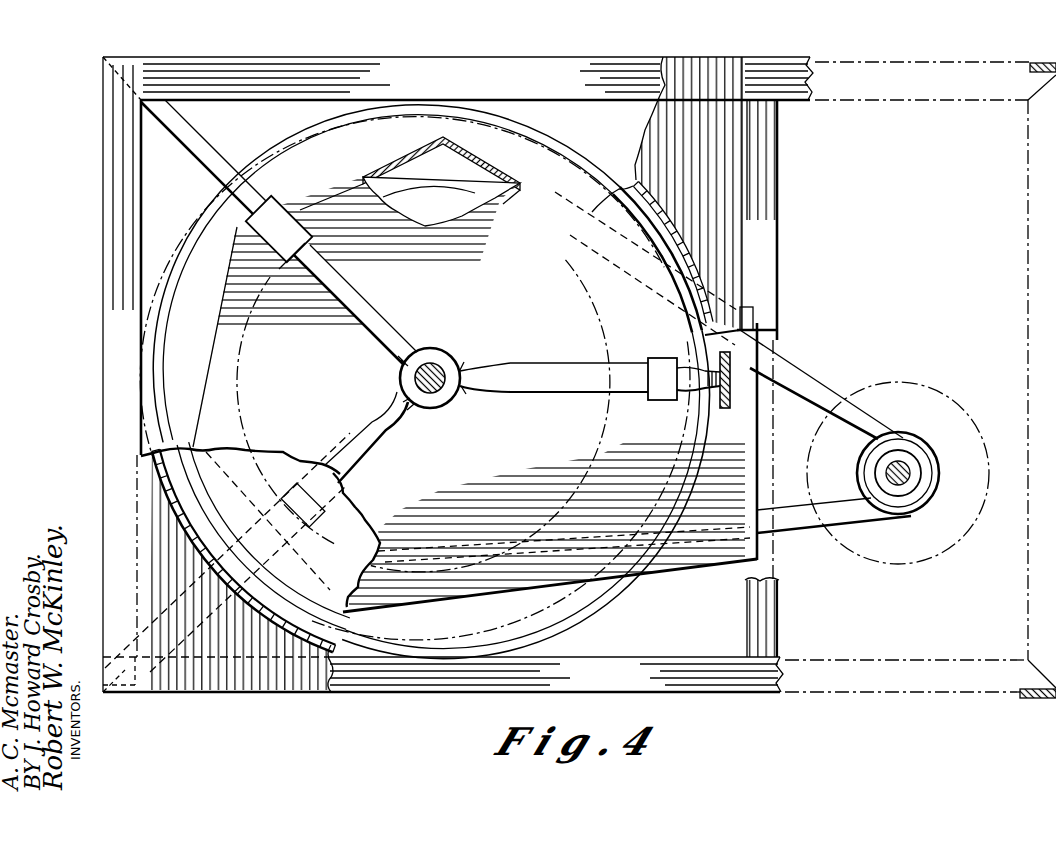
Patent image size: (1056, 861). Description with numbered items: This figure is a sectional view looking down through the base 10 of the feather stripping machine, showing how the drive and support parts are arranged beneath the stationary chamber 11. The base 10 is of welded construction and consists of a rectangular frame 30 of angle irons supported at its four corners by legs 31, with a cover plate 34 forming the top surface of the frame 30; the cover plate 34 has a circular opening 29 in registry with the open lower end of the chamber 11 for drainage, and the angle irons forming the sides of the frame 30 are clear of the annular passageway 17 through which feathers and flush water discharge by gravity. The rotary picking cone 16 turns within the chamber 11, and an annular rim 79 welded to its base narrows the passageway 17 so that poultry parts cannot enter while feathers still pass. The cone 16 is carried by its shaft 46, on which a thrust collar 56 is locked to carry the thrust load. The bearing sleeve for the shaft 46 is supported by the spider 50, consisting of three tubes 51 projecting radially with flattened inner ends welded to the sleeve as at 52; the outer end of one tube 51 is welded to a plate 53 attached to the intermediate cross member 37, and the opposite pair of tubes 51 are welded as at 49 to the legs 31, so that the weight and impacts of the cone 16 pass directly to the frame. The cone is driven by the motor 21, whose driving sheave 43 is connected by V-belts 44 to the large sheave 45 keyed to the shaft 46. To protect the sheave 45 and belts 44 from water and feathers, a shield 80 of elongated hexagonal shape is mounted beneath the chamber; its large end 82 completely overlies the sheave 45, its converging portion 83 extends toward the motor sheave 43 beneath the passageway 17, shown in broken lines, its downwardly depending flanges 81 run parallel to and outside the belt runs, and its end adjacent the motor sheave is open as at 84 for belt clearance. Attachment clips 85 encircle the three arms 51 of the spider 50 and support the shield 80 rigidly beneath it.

The base 10 is at (100, 357).
The stationary chamber 11 is at (180, 518).
The rotary picking cone 16 is at (347, 527).
The annular passageway 17 is at (182, 498).
The motor 21 is at (951, 398).
The circular opening 29 is at (215, 553).
The rectangular frame 30 is at (378, 694).
The legs 31 is at (1040, 62).
The cover plate 34 is at (696, 80).
The intermediate cross member 37 is at (772, 279).
The driving sheave 43 is at (913, 446).
The V-belts 44 is at (810, 381).
The large sheave 45 is at (433, 206).
The shaft 46 is at (432, 393).
The weld 49 is at (108, 668).
The spider 50 is at (400, 323).
The tubes 51 is at (330, 300).
The weld 52 is at (400, 362).
The plate 53 is at (706, 408).
The thrust collar 56 is at (455, 356).
The annular rim 79 is at (192, 506).
The shield 80 is at (543, 594).
The flange 81 is at (497, 169).
The large end 82 is at (230, 304).
The converging portion 83 is at (585, 213).
The open end 84 is at (762, 430).
The attachment clips 85 is at (662, 394).